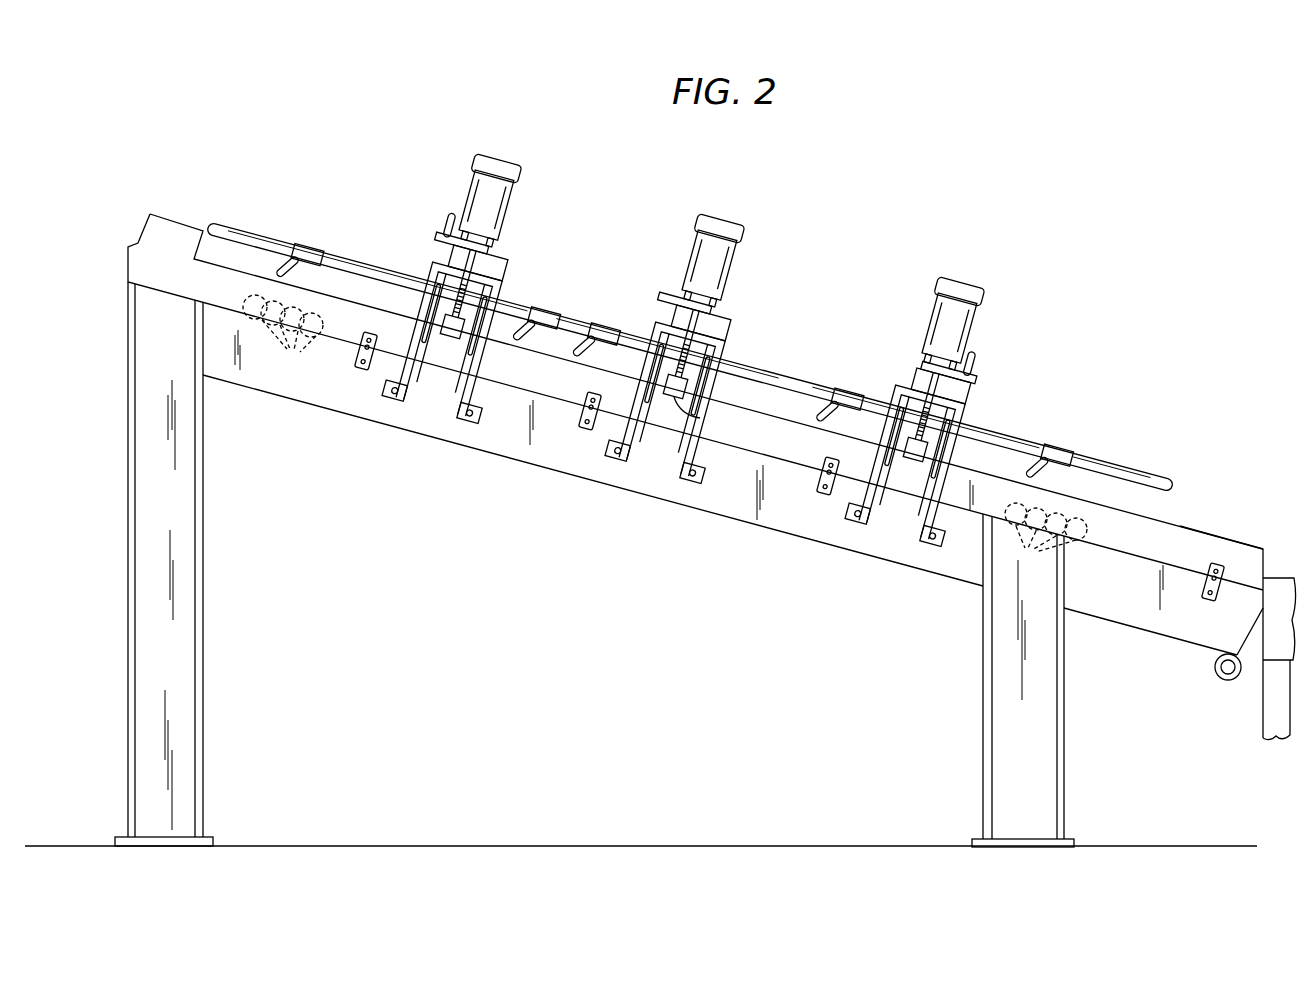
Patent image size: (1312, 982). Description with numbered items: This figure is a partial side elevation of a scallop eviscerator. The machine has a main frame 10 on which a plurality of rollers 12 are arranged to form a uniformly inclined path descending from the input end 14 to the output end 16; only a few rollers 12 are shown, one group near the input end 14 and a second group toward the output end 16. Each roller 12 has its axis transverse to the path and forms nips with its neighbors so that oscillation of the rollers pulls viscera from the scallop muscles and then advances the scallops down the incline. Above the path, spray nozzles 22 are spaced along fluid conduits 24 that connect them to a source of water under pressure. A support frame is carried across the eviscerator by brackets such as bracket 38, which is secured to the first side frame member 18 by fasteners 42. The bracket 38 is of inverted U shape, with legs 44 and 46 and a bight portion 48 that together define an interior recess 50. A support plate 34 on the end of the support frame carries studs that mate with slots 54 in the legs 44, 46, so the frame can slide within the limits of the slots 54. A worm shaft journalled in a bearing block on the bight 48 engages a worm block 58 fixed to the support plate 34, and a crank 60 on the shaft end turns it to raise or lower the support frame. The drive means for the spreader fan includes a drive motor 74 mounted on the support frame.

The main frame 10 is at (204, 502).
The rollers 12 is at (665, 434).
The input end 14 is at (128, 256).
The output end 16 is at (1265, 560).
The first side frame member 18 is at (1216, 550).
The spray nozzles 22 is at (313, 258).
The fluid conduits 24 is at (402, 262).
The support plate 34 is at (452, 326).
The bracket 38 is at (479, 284).
The fasteners 42 is at (469, 412).
The leg 44 is at (396, 356).
The leg 46 is at (449, 339).
The bight portion 48 is at (478, 263).
The interior recess 50 is at (394, 390).
The slots 54 is at (478, 326).
The worm block 58 is at (700, 418).
The crank 60 is at (465, 232).
The drive motor 74 is at (487, 202).